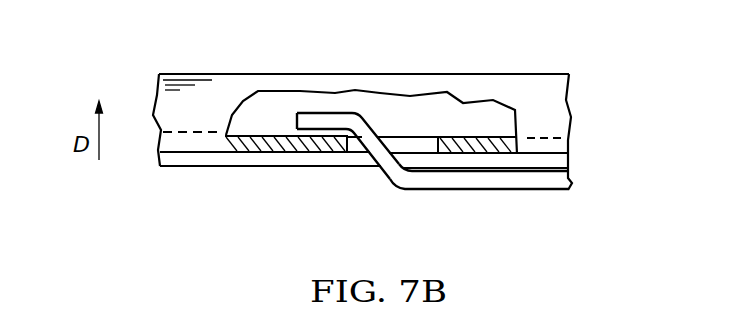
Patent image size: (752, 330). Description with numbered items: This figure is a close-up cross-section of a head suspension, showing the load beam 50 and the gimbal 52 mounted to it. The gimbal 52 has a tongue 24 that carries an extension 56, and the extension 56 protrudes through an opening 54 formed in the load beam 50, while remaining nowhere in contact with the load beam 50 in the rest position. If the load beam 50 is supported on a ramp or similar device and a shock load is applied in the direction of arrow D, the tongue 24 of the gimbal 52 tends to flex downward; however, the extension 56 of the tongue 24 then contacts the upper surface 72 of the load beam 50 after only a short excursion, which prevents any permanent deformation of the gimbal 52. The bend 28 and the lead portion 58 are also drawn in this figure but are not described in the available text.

The lower lead portion 24 is at (494, 213).
The lead bend 28 is at (383, 206).
The circuit assembly 50 is at (399, 132).
The dielectric layer 52 is at (375, 193).
The encapsulant 54 is at (371, 91).
The bond joint 56 is at (289, 181).
The upper lead portion 58 is at (324, 97).
The bond pad 72 is at (255, 84).